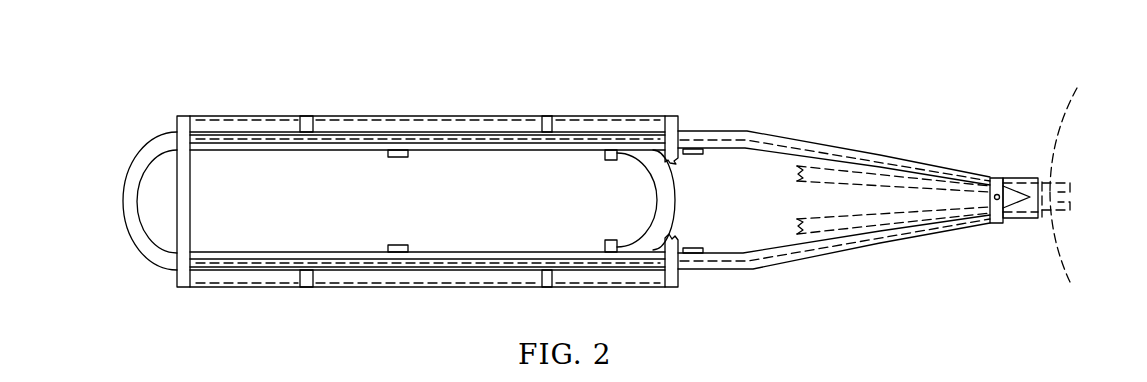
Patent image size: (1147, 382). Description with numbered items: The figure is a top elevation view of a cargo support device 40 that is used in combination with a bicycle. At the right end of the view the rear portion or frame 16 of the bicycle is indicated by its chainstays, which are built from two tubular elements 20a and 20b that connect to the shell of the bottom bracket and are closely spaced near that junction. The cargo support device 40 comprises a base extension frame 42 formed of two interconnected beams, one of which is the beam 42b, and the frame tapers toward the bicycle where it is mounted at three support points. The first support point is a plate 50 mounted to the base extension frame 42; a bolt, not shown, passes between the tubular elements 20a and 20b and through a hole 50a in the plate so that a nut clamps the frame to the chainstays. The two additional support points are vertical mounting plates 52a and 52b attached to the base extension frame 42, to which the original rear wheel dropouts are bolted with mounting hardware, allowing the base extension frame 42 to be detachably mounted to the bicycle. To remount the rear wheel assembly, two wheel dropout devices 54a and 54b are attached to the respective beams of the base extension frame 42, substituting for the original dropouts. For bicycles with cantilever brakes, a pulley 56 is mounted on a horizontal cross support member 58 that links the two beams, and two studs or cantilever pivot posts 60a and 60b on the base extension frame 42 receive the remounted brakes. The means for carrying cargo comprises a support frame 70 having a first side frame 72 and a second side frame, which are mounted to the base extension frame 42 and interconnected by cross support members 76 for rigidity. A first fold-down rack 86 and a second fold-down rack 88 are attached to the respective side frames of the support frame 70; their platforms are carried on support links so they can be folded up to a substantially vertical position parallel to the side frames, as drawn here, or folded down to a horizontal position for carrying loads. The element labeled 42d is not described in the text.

The rear portion or frame 16 is at (180, 275).
The tubular element 20a is at (1083, 140).
The tubular element 20b is at (1075, 253).
The cargo support device 40 is at (500, 80).
The base extension frame 42 is at (862, 138).
The beam 42b is at (873, 246).
The upper arm 42d is at (842, 88).
The plate 50 is at (997, 178).
The hole 50a is at (990, 224).
The vertical mounting plate 52a is at (687, 161).
The vertical mounting plate 52b is at (672, 258).
The wheel dropout device 54a is at (407, 148).
The wheel dropout device 54b is at (405, 250).
The pulley 56 is at (675, 198).
The horizontal cross support member 58 is at (652, 244).
The cantilever pivot post 60a is at (617, 150).
The cantilever pivot post 60b is at (617, 248).
The support frame 70 is at (198, 115).
The first side frame 72 is at (582, 122).
The cross support member 76 is at (679, 274).
The first fold-down rack 86 is at (368, 115).
The second fold-down rack 88 is at (387, 280).